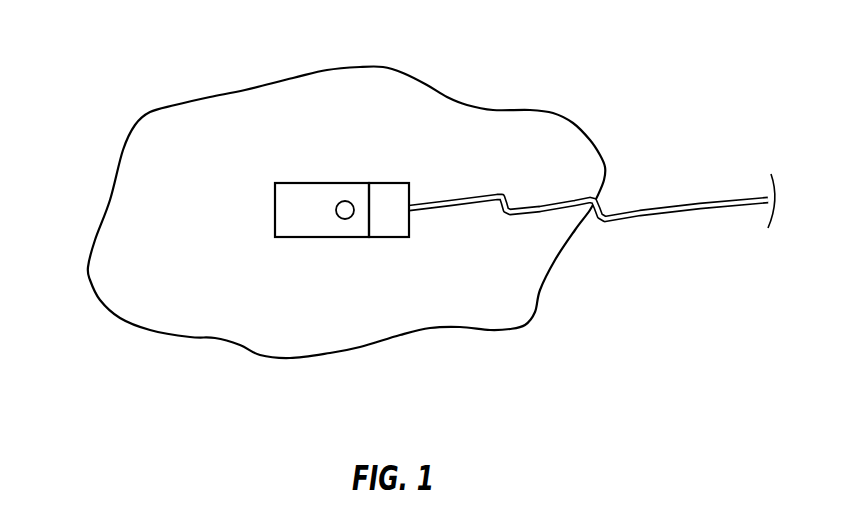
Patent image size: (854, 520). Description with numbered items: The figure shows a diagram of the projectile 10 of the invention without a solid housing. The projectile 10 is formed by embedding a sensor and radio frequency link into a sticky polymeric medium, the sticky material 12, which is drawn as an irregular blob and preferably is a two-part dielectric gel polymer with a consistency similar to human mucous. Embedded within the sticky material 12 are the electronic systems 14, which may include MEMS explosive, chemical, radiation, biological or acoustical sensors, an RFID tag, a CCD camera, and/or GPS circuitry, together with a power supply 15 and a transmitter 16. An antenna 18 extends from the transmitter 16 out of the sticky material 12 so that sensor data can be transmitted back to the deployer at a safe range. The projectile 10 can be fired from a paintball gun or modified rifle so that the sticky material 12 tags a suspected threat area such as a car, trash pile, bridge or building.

The projectile 10 is at (141, 65).
The sticky material 12 is at (118, 167).
The electronic systems 14 is at (305, 183).
The power supply 15 is at (345, 219).
The transmitter 16 is at (386, 183).
The antenna 18 is at (675, 220).